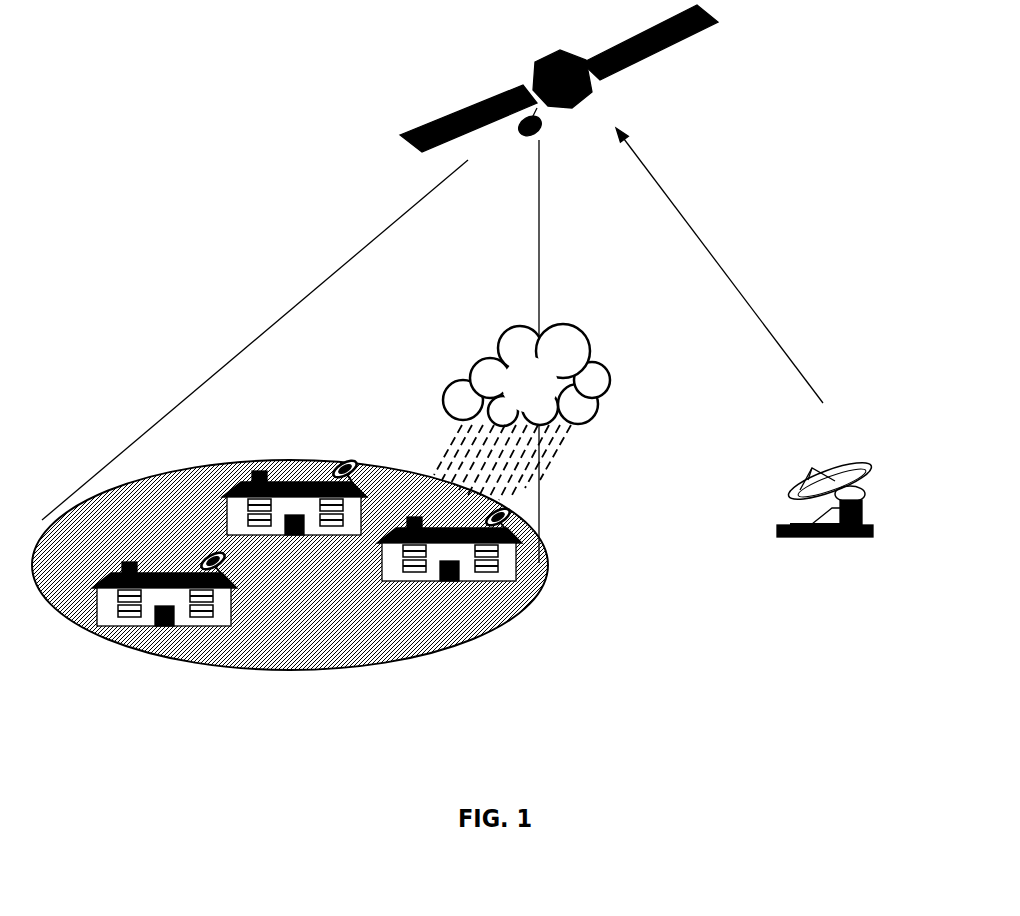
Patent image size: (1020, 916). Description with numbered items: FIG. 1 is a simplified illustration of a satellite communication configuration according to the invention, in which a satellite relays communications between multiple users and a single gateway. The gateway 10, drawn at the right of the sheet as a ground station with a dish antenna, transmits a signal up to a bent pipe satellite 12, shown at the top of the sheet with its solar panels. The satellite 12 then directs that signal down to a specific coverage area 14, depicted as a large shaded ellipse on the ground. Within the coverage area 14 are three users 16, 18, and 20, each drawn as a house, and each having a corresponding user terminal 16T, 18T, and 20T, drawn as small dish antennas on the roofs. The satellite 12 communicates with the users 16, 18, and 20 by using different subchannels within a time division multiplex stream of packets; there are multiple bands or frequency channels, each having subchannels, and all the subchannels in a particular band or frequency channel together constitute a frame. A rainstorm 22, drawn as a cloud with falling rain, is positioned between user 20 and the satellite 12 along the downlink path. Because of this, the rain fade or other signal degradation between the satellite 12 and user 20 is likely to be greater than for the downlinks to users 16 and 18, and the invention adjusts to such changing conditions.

The gateway 10 is at (813, 468).
The bent pipe satellite 12 is at (700, 28).
The coverage area 14 is at (33, 543).
The user 16 is at (117, 627).
The user terminal 16T is at (230, 570).
The user 18 is at (272, 480).
The user terminal 18T is at (357, 460).
The user 20 is at (497, 588).
The user terminal 20T is at (517, 518).
The rainstorm 22 is at (600, 382).